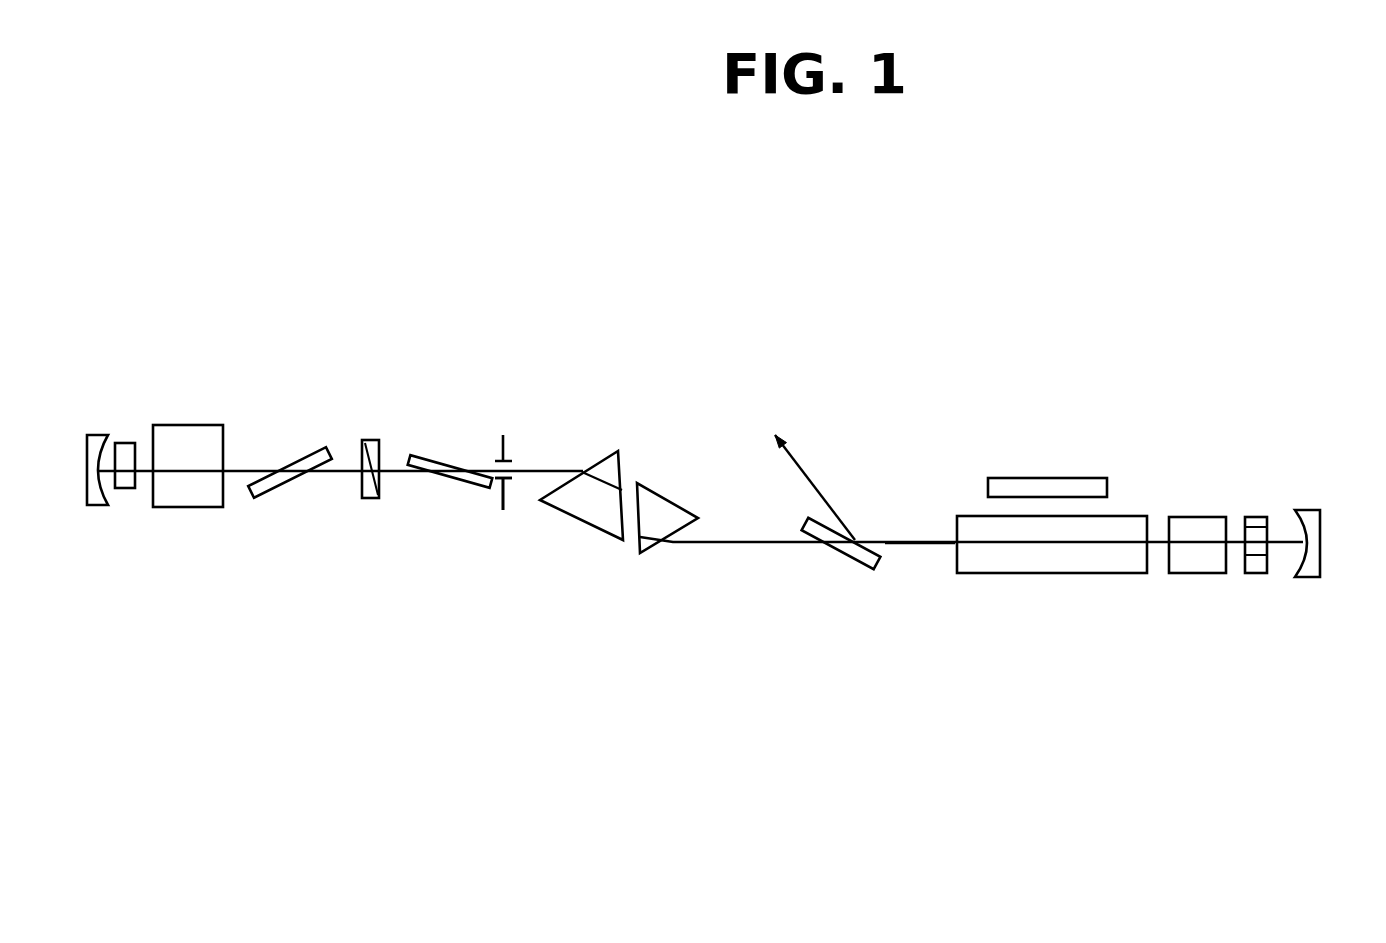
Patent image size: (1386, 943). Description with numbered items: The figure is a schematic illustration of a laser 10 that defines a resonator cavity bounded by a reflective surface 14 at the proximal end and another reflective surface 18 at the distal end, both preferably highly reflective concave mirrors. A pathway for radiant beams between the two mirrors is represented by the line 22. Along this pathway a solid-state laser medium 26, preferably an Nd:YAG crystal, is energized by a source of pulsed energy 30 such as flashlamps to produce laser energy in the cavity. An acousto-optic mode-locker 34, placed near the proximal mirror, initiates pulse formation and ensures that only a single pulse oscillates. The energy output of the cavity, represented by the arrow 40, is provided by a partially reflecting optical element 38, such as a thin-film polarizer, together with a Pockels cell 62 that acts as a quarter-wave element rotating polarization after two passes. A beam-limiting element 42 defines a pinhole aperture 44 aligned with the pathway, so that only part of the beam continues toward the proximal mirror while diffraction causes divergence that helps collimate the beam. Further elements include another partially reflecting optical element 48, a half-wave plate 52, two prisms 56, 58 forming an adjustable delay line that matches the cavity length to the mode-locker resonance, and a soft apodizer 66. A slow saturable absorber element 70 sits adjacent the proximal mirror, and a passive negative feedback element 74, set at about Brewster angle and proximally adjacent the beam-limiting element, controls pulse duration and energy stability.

The laser 10 is at (568, 377).
The reflective surface 14 is at (92, 435).
The reflective surface 18 is at (1312, 512).
The beam pathway 22 is at (912, 542).
The solid-state laser medium 26 is at (1015, 562).
The source of pulsed energy 30 is at (1050, 487).
The acousto-optic mode-locker 34 is at (192, 432).
The partially reflecting optical element 38 is at (852, 548).
The energy output 40 is at (815, 460).
The beam-limiting element 42 is at (505, 493).
The aperture 44 is at (491, 465).
The partially reflecting optical element 48 is at (307, 455).
The half-wave plate 52 is at (370, 493).
The prism 56 is at (612, 518).
The prism 58 is at (662, 528).
The Pockels cell 62 is at (1195, 560).
The soft apodizer 66 is at (1258, 563).
The saturable absorber element 70 is at (125, 443).
The passive negative feedback element 74 is at (460, 477).